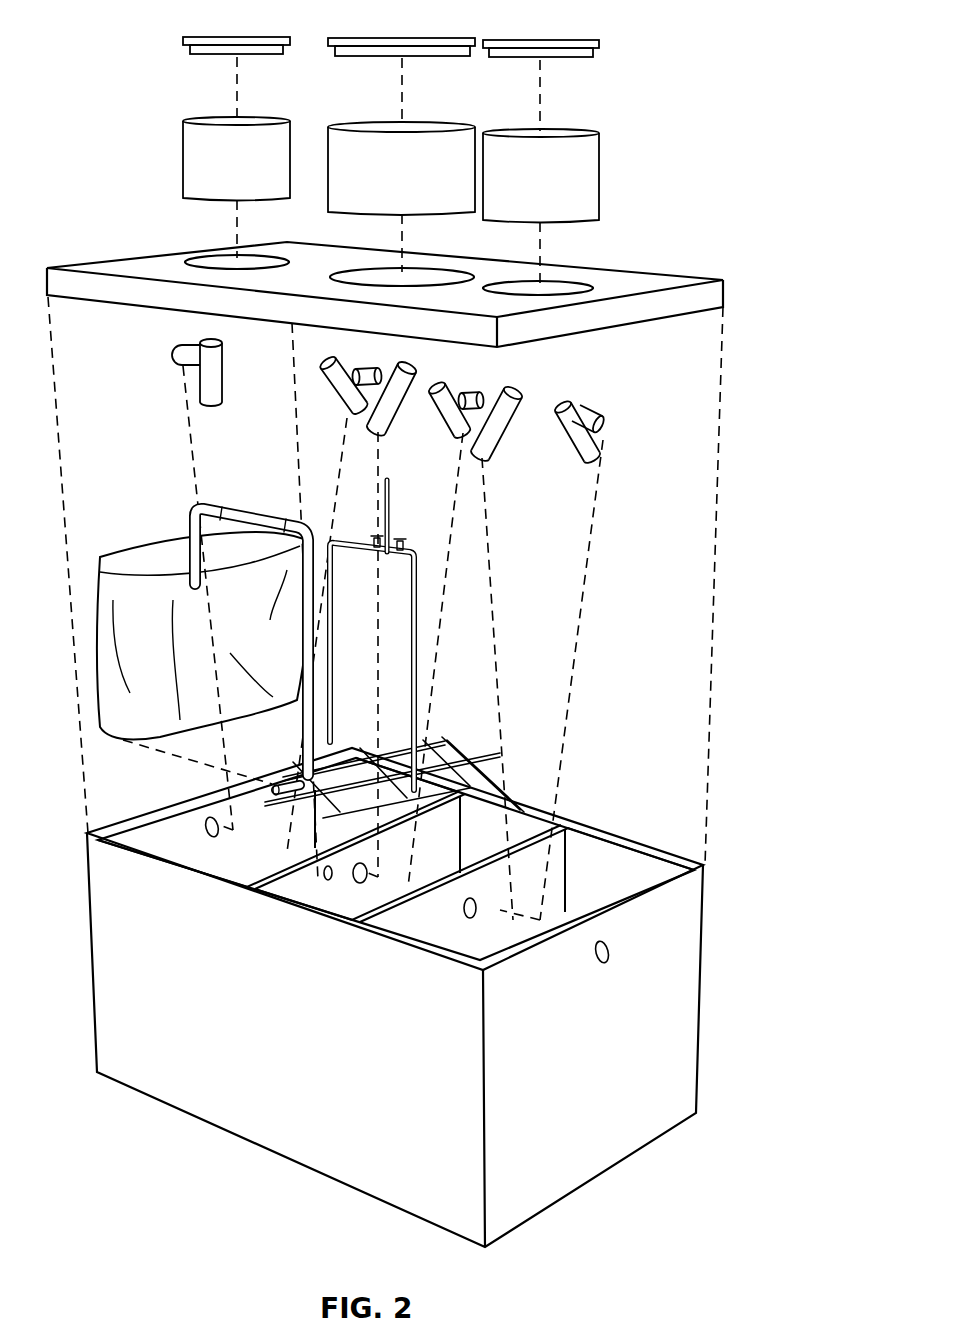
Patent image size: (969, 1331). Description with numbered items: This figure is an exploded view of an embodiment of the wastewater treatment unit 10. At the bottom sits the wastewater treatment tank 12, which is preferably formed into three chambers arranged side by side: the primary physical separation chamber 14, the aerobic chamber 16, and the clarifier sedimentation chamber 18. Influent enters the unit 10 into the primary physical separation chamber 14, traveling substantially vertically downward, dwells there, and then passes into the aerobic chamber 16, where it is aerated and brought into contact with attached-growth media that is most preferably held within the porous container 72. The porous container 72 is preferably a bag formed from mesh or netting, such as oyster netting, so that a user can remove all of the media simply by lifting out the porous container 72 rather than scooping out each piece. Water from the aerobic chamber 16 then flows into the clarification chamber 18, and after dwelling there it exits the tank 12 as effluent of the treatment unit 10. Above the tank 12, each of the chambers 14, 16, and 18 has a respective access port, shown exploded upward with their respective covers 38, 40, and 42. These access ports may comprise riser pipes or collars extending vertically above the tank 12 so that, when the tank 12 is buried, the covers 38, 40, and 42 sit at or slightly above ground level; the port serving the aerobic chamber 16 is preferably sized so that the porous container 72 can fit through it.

The treatment unit 10 is at (700, 39).
The wastewater treatment tank 12 is at (690, 1008).
The primary physical separation chamber 14 is at (207, 856).
The aerobic chamber 16 is at (311, 885).
The clarifier sedimentation chamber 18 is at (610, 866).
The cover 38 is at (236, 35).
The cover 40 is at (432, 38).
The cover 42 is at (560, 40).
The porous container 72 is at (140, 728).